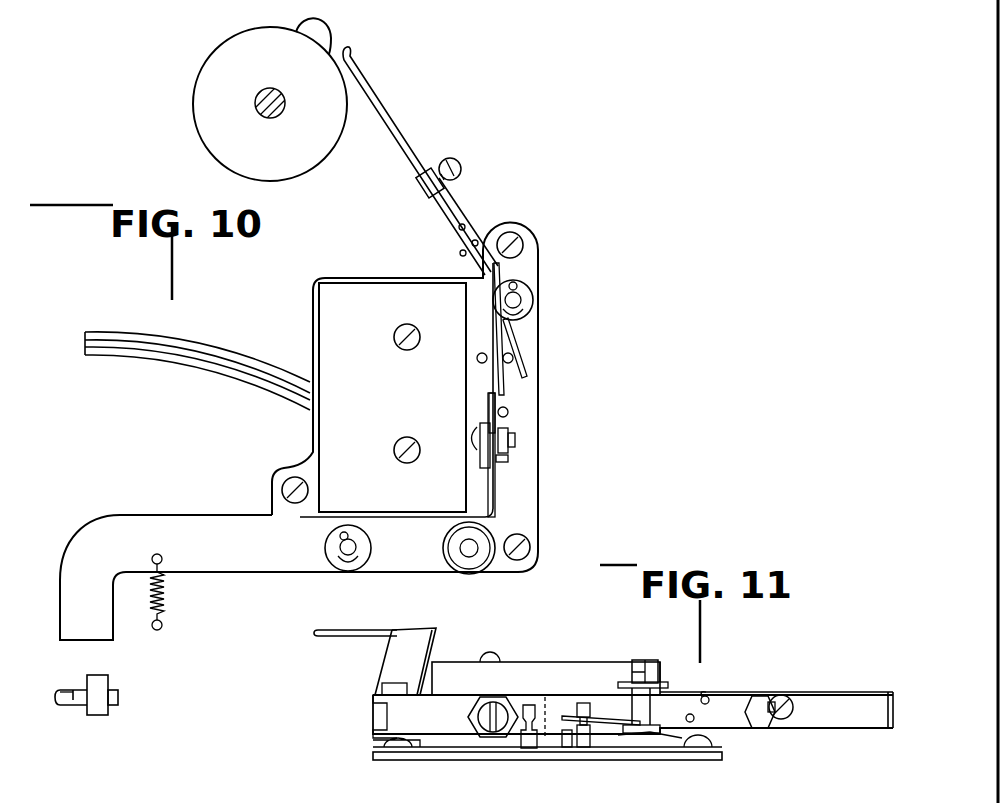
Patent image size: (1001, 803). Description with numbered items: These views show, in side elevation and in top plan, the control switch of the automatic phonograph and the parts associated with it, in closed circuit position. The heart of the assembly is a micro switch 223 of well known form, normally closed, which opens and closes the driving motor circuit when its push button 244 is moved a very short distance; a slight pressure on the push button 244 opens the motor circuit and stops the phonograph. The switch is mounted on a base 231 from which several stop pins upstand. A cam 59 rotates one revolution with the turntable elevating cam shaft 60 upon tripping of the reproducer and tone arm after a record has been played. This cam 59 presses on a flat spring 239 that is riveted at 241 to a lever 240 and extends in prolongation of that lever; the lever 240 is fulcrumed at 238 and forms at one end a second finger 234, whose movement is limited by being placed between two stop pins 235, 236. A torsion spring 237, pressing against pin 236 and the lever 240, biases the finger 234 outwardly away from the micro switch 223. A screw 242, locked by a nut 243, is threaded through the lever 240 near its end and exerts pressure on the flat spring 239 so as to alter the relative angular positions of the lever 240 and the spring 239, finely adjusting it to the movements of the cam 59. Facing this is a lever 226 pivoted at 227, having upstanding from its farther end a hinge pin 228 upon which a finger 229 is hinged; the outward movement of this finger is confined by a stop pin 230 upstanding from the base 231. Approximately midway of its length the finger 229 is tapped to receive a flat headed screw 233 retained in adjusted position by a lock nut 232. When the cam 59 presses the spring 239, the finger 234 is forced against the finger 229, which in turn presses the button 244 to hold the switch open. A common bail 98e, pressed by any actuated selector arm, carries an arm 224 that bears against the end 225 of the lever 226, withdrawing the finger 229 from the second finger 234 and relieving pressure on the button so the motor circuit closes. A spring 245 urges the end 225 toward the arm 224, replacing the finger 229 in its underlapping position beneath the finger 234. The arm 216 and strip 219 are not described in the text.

In FIG. 10, the cam 59 is at (210, 115).
In FIG. 10, the turntable elevating cam shaft 60 is at (263, 97).
In FIG. 10, the common bail 98e is at (75, 700).
In FIG. 10, the actuating arm 216 is at (196, 530).
In FIG. 10, the leaf spring strip 219 is at (185, 347).
In FIG. 10, the micro switch 223 is at (330, 331).
In FIG. 11, the micro switch 223 is at (550, 668).
In FIG. 10, the arm 224 is at (105, 687).
In FIG. 10, the end of lever 225 is at (85, 628).
In FIG. 11, the end of lever 225 is at (316, 633).
In FIG. 11, the lever 226 is at (390, 658).
In FIG. 10, the pivot 227 is at (343, 560).
In FIG. 10, the hinge pin 228 is at (480, 548).
In FIG. 10, the finger 229 is at (490, 480).
In FIG. 11, the finger 229 is at (425, 718).
In FIG. 10, the stop pin 230 is at (500, 430).
In FIG. 11, the stop pin 230 is at (528, 745).
In FIG. 10, the base 231 is at (525, 513).
In FIG. 11, the base 231 is at (411, 758).
In FIG. 10, the lock nut 232 is at (508, 462).
In FIG. 11, the lock nut 232 is at (498, 710).
In FIG. 10, the flat headed screw 233 is at (510, 450).
In FIG. 11, the flat headed screw 233 is at (478, 700).
In FIG. 10, the second finger 234 is at (509, 412).
In FIG. 11, the second finger 234 is at (562, 738).
In FIG. 10, the stop pin 235 is at (476, 361).
In FIG. 10, the stop pin 236 is at (515, 392).
In FIG. 11, the stop pin 236 is at (590, 752).
In FIG. 10, the torsion spring 237 is at (515, 340).
In FIG. 11, the torsion spring 237 is at (605, 716).
In FIG. 10, the fulcrum 238 is at (517, 300).
In FIG. 11, the fulcrum 238 is at (642, 668).
In FIG. 10, the flat spring 239 is at (384, 133).
In FIG. 11, the flat spring 239 is at (834, 728).
In FIG. 10, the lever 240 is at (447, 207).
In FIG. 11, the lever 240 is at (731, 700).
In FIG. 10, the rivet 241 is at (452, 233).
In FIG. 11, the rivet 241 is at (701, 696).
In FIG. 10, the screw 242 is at (462, 160).
In FIG. 11, the screw 242 is at (783, 702).
In FIG. 10, the nut 243 is at (427, 166).
In FIG. 11, the nut 243 is at (768, 725).
In FIG. 10, the push button 244 is at (470, 434).
In FIG. 10, the spring 245 is at (168, 600).